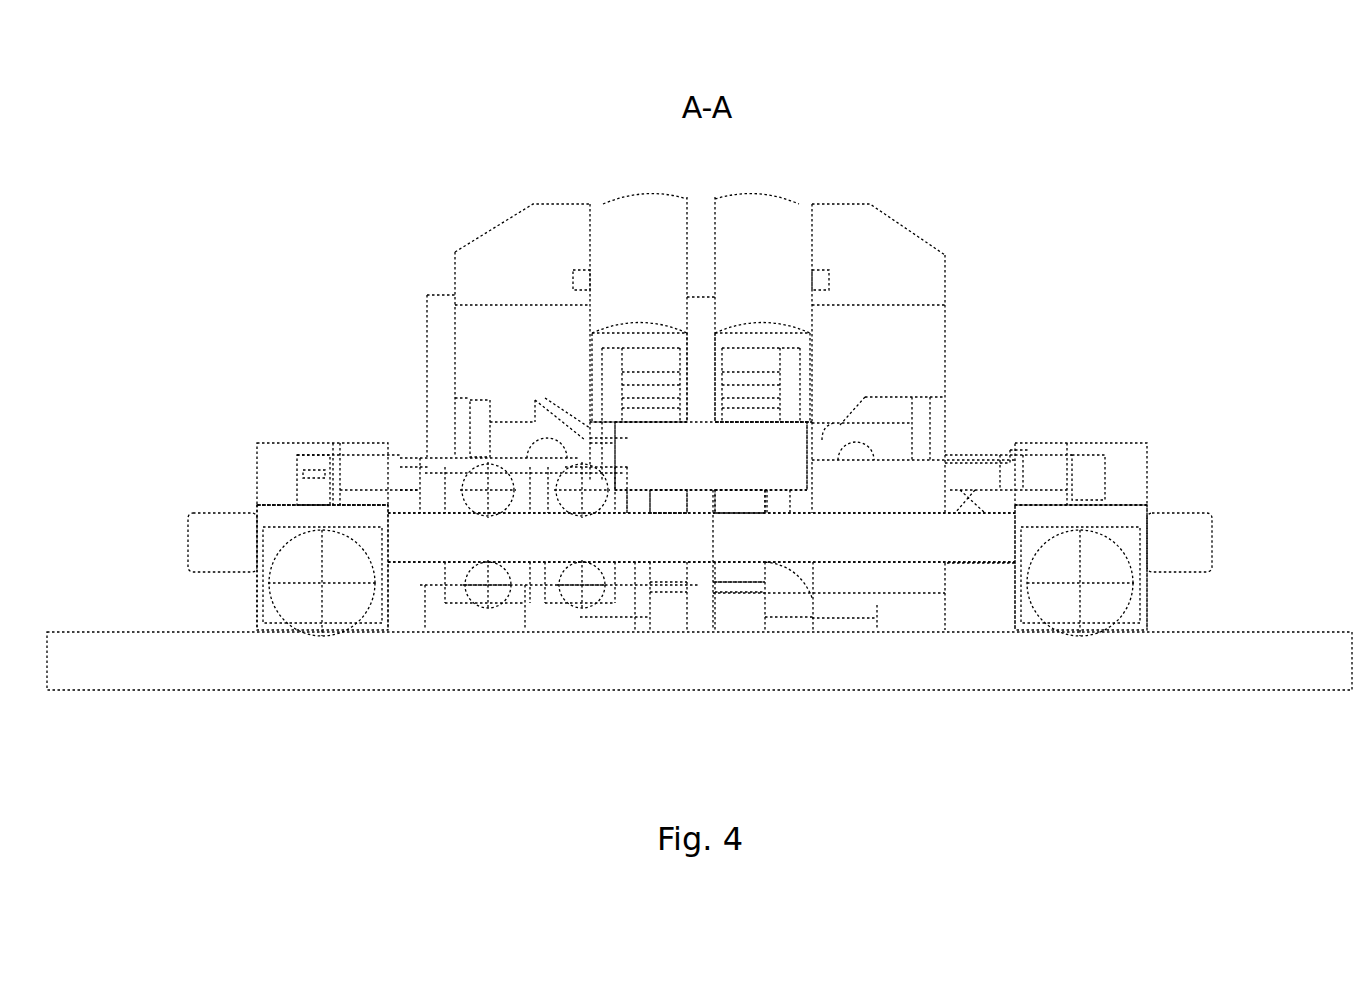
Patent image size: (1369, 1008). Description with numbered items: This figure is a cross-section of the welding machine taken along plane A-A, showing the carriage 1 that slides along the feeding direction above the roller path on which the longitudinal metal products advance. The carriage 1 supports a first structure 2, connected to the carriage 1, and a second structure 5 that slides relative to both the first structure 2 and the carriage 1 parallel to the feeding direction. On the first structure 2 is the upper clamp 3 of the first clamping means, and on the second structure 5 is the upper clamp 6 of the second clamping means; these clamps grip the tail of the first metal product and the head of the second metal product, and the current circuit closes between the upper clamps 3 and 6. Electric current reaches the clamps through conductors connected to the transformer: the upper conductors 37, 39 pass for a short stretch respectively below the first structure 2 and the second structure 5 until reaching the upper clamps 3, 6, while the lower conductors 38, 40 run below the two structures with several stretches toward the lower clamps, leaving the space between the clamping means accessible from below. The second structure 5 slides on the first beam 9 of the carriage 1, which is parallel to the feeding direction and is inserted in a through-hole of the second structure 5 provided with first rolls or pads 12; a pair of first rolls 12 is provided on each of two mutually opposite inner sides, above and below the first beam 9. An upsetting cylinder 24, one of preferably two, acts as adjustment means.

The carriage 1 is at (1186, 470).
The first structure 2 is at (809, 180).
The upper clamp 3 is at (773, 380).
The second structure 5 is at (597, 180).
The upper clamp 6 is at (637, 380).
The first beam 9 is at (917, 540).
The first rolls or pads 12 is at (578, 480).
The upsetting cylinder 24 is at (767, 450).
The upper conductor 37 is at (763, 415).
The lower conductor 38 is at (735, 502).
The upper conductor 39 is at (648, 417).
The lower conductor 40 is at (672, 500).